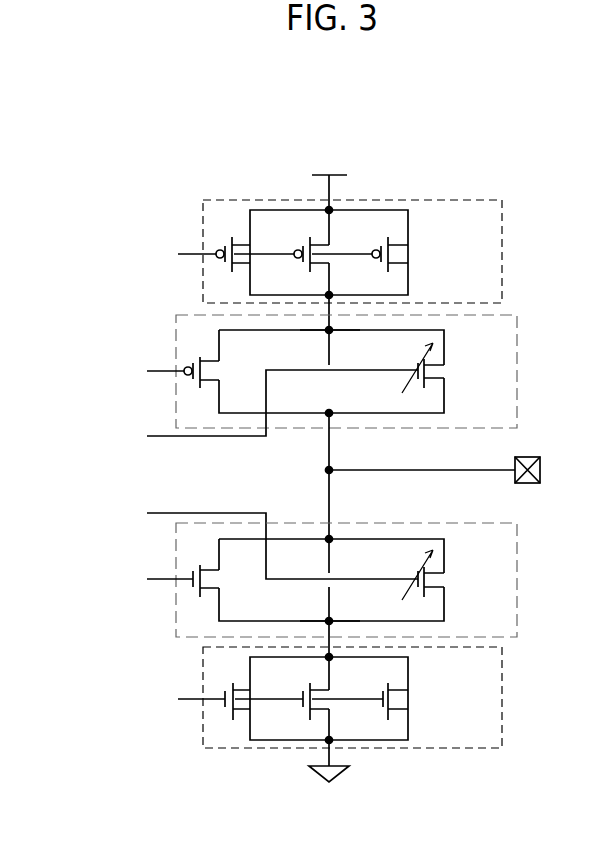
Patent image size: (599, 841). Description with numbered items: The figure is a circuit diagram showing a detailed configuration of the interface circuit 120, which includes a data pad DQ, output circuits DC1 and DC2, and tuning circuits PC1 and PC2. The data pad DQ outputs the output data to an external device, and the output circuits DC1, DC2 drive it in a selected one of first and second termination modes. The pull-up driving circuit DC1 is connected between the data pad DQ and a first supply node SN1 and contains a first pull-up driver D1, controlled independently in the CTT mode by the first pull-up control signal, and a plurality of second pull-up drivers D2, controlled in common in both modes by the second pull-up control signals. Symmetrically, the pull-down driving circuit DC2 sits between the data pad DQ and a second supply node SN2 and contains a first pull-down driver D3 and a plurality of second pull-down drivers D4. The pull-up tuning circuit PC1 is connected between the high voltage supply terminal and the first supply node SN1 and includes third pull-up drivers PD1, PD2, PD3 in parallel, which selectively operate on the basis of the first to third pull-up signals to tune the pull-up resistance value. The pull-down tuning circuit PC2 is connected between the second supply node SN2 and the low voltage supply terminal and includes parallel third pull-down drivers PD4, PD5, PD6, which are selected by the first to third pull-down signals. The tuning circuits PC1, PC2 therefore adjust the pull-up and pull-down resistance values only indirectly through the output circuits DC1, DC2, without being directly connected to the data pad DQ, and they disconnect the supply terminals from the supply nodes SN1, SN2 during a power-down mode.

The interface circuit 120 is at (228, 134).
The pull-up tuning circuit PC1 is at (488, 232).
The pull-down tuning circuit PC2 is at (488, 685).
The pull-up driving circuit DC1 is at (504, 357).
The pull-down driving circuit DC2 is at (504, 567).
The third pull-up driver PD1 is at (250, 263).
The third pull-up driver PD2 is at (329, 263).
The third pull-up driver PD3 is at (407, 263).
The third pull-down driver PD4 is at (256, 709).
The third pull-down driver PD5 is at (334, 709).
The third pull-down driver PD6 is at (413, 709).
The first pull-up driver D1 is at (214, 375).
The second pull-up drivers D2 is at (436, 370).
The first pull-down driver D3 is at (219, 585).
The second pull-down drivers D4 is at (436, 577).
The first supply node SN1 is at (330, 346).
The second supply node SN2 is at (330, 605).
The data pad DQ is at (434, 483).